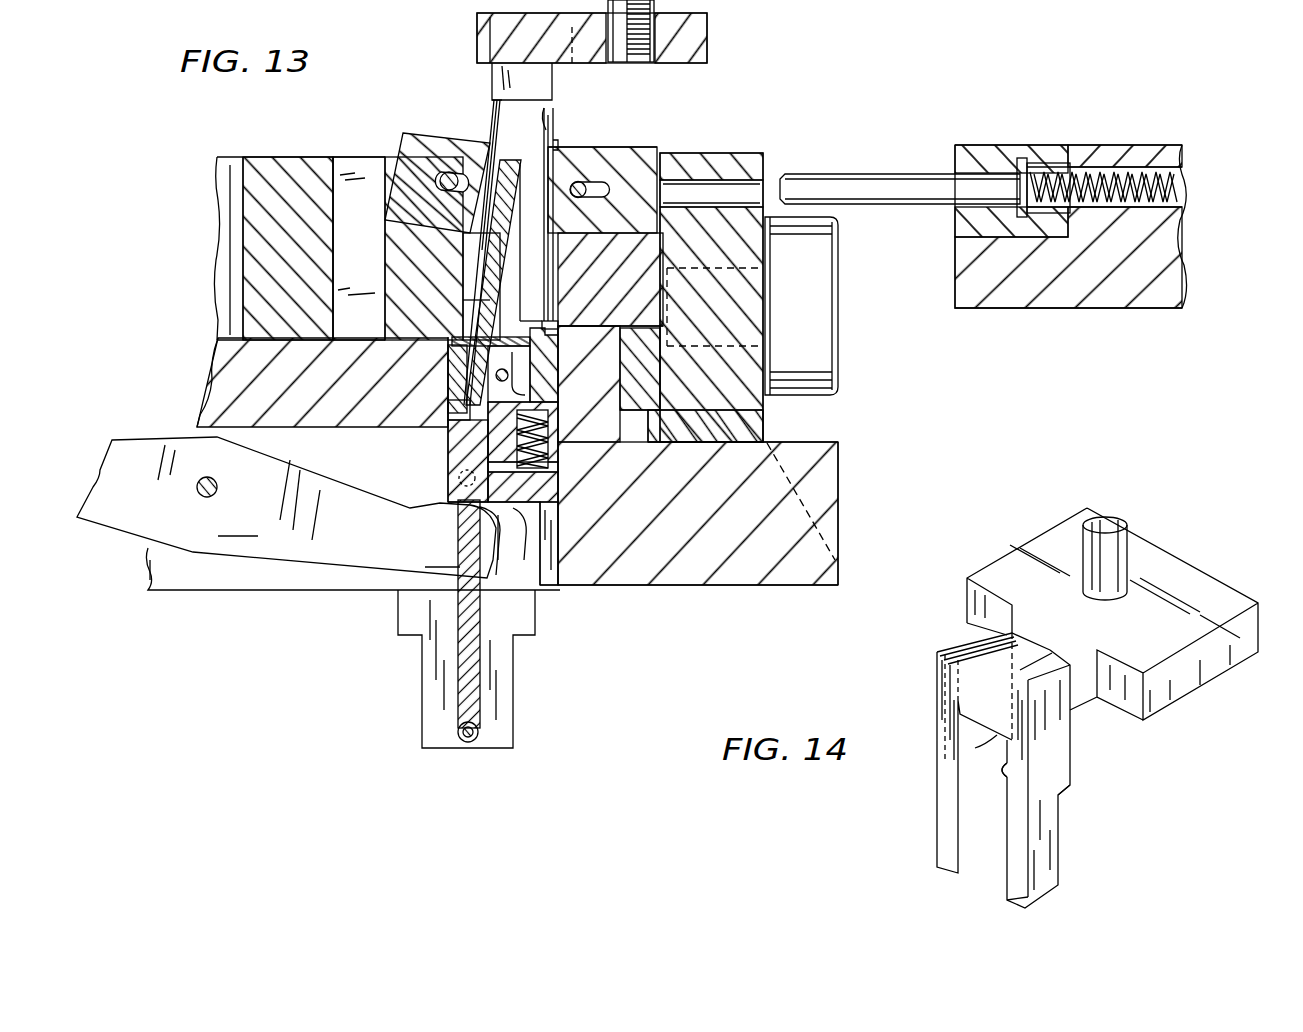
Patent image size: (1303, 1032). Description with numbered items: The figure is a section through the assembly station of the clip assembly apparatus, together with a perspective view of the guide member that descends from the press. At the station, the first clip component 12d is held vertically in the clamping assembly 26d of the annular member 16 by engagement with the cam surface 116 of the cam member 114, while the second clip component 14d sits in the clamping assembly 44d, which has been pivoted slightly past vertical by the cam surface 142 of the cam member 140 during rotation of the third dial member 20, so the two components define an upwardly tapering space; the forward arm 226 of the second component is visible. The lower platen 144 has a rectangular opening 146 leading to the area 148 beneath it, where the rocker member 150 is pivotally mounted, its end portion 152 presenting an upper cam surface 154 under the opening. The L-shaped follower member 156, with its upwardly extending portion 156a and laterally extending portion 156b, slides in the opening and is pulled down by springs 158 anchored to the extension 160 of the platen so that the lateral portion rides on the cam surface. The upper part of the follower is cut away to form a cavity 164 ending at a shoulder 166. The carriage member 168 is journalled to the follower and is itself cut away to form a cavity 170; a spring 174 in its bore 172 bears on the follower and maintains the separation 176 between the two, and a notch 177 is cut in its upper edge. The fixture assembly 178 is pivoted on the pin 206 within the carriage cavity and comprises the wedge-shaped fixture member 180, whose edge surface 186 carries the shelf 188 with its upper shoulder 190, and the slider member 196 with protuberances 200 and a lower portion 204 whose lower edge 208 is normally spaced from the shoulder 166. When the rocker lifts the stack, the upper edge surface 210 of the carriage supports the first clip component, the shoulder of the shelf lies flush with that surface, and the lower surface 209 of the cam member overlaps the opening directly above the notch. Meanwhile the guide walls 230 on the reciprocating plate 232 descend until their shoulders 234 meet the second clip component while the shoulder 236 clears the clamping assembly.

In FIG. 13, the first clip component 12d is at (554, 120).
In FIG. 13, the second clip component 14d is at (497, 112).
In FIG. 13, the annular member 16 is at (768, 162).
In FIG. 13, the third dial member 20 is at (283, 157).
In FIG. 13, the clamping assembly 26d is at (657, 147).
In FIG. 13, the clamping assembly 44d is at (429, 166).
In FIG. 13, the cam member 114 is at (667, 308).
In FIG. 13, the cam surface 116 is at (668, 218).
In FIG. 13, the cam member 140 is at (395, 277).
In FIG. 13, the cam surface 142 is at (392, 182).
In FIG. 13, the lower platen 144 is at (833, 463).
In FIG. 13, the rectangular opening 146 is at (475, 330).
In FIG. 13, the area 148 is at (550, 557).
In FIG. 13, the rocker member 150 is at (286, 507).
In FIG. 13, the end portion 152 is at (452, 614).
In FIG. 13, the upper cam surface 154 is at (484, 560).
In FIG. 13, the follower member 156 is at (452, 484).
In FIG. 13, the upwardly extending portion 156a is at (458, 460).
In FIG. 13, the laterally extending portion 156b is at (545, 505).
In FIG. 13, the springs 158 is at (480, 612).
In FIG. 13, the extension 160 is at (500, 662).
In FIG. 13, the cavity 164 is at (466, 398).
In FIG. 13, the shoulder 166 is at (466, 410).
In FIG. 13, the carriage member 168 is at (564, 400).
In FIG. 13, the cavity 170 is at (530, 380).
In FIG. 13, the bore 172 is at (548, 446).
In FIG. 13, the spring 174 is at (558, 467).
In FIG. 13, the separation 176 is at (509, 514).
In FIG. 13, the notch 177 is at (560, 338).
In FIG. 13, the fixture assembly 178 is at (526, 276).
In FIG. 13, the fixture member 180 is at (589, 178).
In FIG. 13, the edge surface 186 is at (522, 217).
In FIG. 13, the shelf 188 is at (558, 360).
In FIG. 13, the upper shoulder 190 is at (480, 300).
In FIG. 13, the slider member 196 is at (447, 260).
In FIG. 13, the protuberances 200 is at (457, 171).
In FIG. 13, the lower portion 204 is at (483, 345).
In FIG. 13, the pin 206 is at (456, 426).
In FIG. 13, the lower edge 208 is at (448, 372).
In FIG. 13, the lower surface 209 is at (647, 352).
In FIG. 13, the upper edge surface 210 is at (568, 305).
In FIG. 13, the forward arm 226 is at (490, 150).
In FIG. 13, the guide walls 230 is at (556, 107).
In FIG. 14, the guide walls 230 is at (948, 829).
In FIG. 13, the plate 232 is at (708, 40).
In FIG. 14, the plate 232 is at (1247, 652).
In FIG. 13, the shoulders 234 is at (532, 100).
In FIG. 14, the shoulders 234 is at (990, 735).
In FIG. 13, the shoulder 236 is at (560, 138).
In FIG. 14, the shoulder 236 is at (1067, 798).